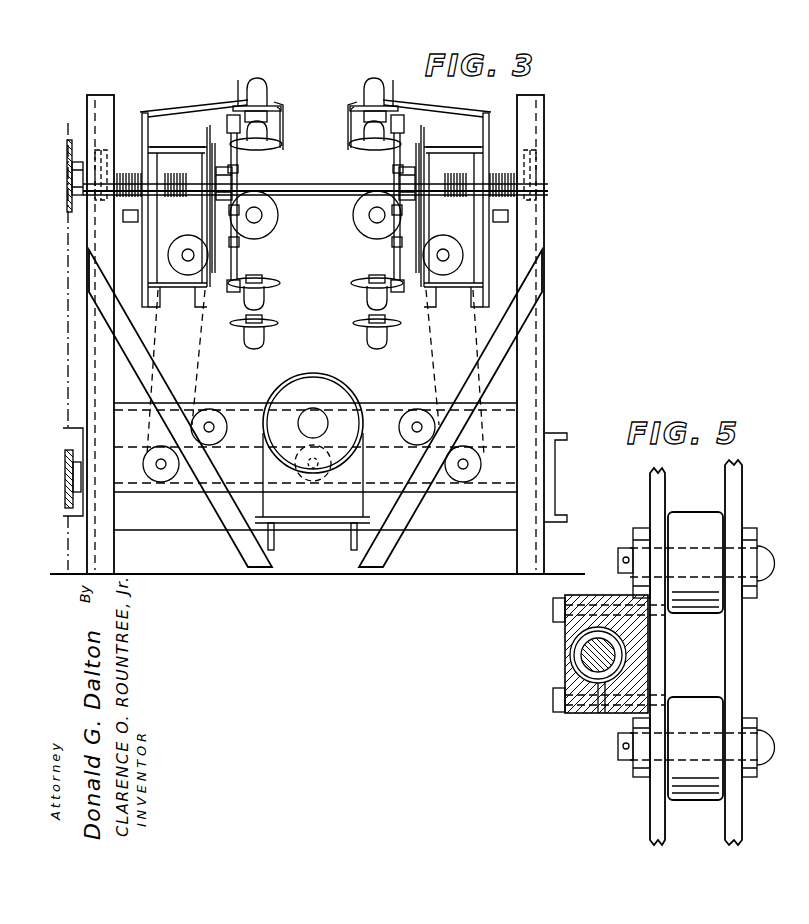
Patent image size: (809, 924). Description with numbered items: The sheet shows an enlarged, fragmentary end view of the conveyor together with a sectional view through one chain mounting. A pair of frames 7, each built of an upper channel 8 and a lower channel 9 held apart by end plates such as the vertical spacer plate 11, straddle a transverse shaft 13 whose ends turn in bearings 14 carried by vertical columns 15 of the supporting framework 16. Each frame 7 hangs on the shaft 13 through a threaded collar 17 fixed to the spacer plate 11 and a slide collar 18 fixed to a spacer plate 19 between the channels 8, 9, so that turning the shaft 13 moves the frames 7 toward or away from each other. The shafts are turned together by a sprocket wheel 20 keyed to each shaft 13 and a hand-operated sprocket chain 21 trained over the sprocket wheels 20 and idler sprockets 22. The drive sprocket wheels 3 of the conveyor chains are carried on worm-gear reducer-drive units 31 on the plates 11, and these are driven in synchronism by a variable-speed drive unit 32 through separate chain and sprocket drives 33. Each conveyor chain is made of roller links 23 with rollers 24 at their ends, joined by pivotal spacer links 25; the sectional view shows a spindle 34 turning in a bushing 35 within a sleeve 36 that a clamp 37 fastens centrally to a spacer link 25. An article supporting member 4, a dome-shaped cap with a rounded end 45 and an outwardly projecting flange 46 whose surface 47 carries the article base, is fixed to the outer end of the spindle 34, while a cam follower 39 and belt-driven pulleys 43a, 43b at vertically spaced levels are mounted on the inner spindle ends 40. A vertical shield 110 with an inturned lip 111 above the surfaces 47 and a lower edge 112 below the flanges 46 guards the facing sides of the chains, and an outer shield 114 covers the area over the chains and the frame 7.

In FIG. 3, the drive sprocket wheel 3 is at (238, 266).
In FIG. 3, the article supporting member 4 is at (266, 93).
In FIG. 3, the frame 7 is at (168, 133).
In FIG. 3, the upper channel 8 is at (187, 147).
In FIG. 3, the lower channel 9 is at (182, 283).
In FIG. 3, the end plate 11 is at (148, 251).
In FIG. 3, the shaft 13 is at (315, 195).
In FIG. 3, the bearing 14 is at (103, 155).
In FIG. 3, the vertical column 15 is at (99, 228).
In FIG. 3, the supporting framework 16 is at (549, 463).
In FIG. 3, the threaded collar 17 is at (166, 200).
In FIG. 3, the slide collar 18 is at (240, 167).
In FIG. 3, the spacer plate 19 is at (210, 217).
In FIG. 3, the sprocket wheel 20 is at (69, 140).
In FIG. 3, the sprocket chain 21 is at (72, 380).
In FIG. 3, the idler sprocket 22 is at (62, 512).
In FIG. 5, the roller link 23 is at (655, 498).
In FIG. 5, the roller 24 is at (714, 608).
In FIG. 5, the spacer link 25 is at (644, 663).
In FIG. 3, the worm-gear reducer-drive unit 31 is at (160, 232).
In FIG. 3, the variable-speed drive unit 32 is at (313, 385).
In FIG. 3, the chain and sprocket drive 33 is at (152, 338).
In FIG. 5, the spindle 34 is at (592, 658).
In FIG. 5, the bushing 35 is at (598, 630).
In FIG. 5, the sleeve 36 is at (580, 660).
In FIG. 5, the clamp 37 is at (570, 633).
In FIG. 5, the cam follower 39 is at (808, 385).
In FIG. 5, the inner end of spindle 40 is at (808, 350).
In FIG. 5, the pulley for leading member 43a is at (808, 358).
In FIG. 5, the pulley for trailing member 43b is at (808, 312).
In FIG. 3, the rounded end of body portion 45 is at (368, 216).
In FIG. 5, the flange 46 is at (808, 147).
In FIG. 3, the supporting surface of flange 47 is at (356, 232).
In FIG. 5, the supporting surface of flange 47 is at (808, 115).
In FIG. 3, the vertical shield 110 is at (347, 119).
In FIG. 5, the vertical shield 110 is at (808, 408).
In FIG. 5, the inturned lip 111 is at (808, 133).
In FIG. 5, the lower edge of shield 112 is at (808, 797).
In FIG. 3, the outer shield 114 is at (213, 103).